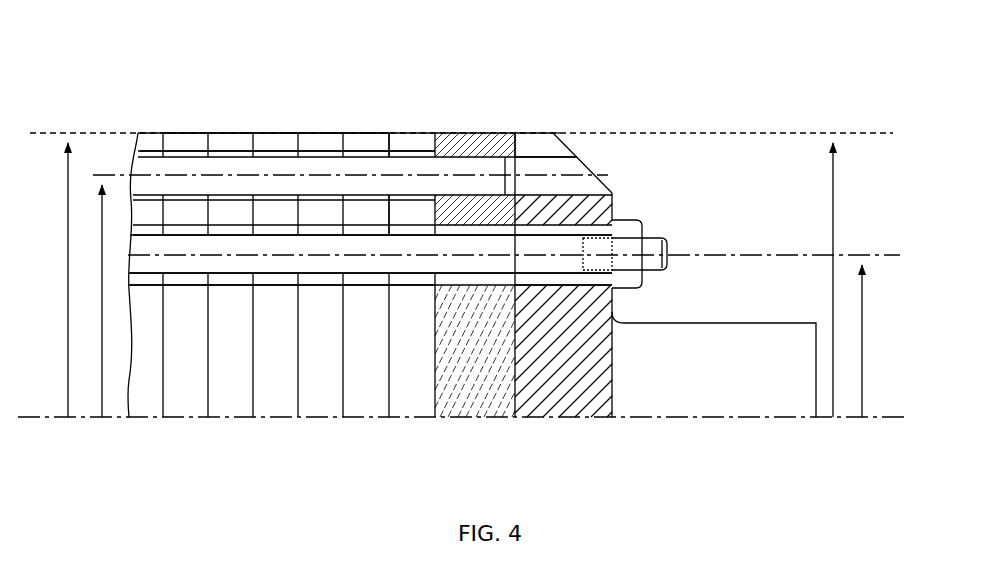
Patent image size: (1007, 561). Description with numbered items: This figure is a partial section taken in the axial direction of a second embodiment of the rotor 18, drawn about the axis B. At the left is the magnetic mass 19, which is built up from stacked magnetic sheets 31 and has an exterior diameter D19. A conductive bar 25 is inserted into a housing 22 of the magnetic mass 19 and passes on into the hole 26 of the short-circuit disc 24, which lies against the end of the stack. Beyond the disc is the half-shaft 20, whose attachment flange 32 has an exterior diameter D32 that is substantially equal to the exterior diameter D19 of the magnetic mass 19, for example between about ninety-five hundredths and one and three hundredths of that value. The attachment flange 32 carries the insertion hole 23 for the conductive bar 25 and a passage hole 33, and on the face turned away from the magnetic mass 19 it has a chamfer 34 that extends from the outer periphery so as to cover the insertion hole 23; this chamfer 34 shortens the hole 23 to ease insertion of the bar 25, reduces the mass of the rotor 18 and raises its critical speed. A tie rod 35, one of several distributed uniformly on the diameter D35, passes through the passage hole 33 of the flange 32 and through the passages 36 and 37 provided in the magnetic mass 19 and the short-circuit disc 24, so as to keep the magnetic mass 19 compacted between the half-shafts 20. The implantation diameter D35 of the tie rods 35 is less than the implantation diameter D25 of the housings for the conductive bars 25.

The rotor 18 is at (601, 46).
The magnetic mass 19 is at (303, 99).
The half-shaft 20 is at (761, 312).
The housing 22 is at (410, 147).
The insertion hole 23 is at (561, 160).
The short-circuit disc 24 is at (477, 131).
The conductive bar 25 is at (181, 171).
The hole 26 is at (438, 150).
The magnetic sheets 31 is at (231, 130).
The attachment flange 32 is at (528, 131).
The passage hole 33 is at (569, 286).
The chamfer 34 is at (587, 150).
The tie rod 35 is at (549, 251).
The passage 36 is at (331, 286).
The passage 37 is at (473, 297).
The exterior diameter of the magnetic mass D19 is at (67, 277).
The implantation diameter of the housings D25 is at (99, 392).
The exterior diameter of the attachment flange D32 is at (838, 204).
The implantation diameter of the tie rods D35 is at (866, 344).
The axis of rotation B is at (474, 418).